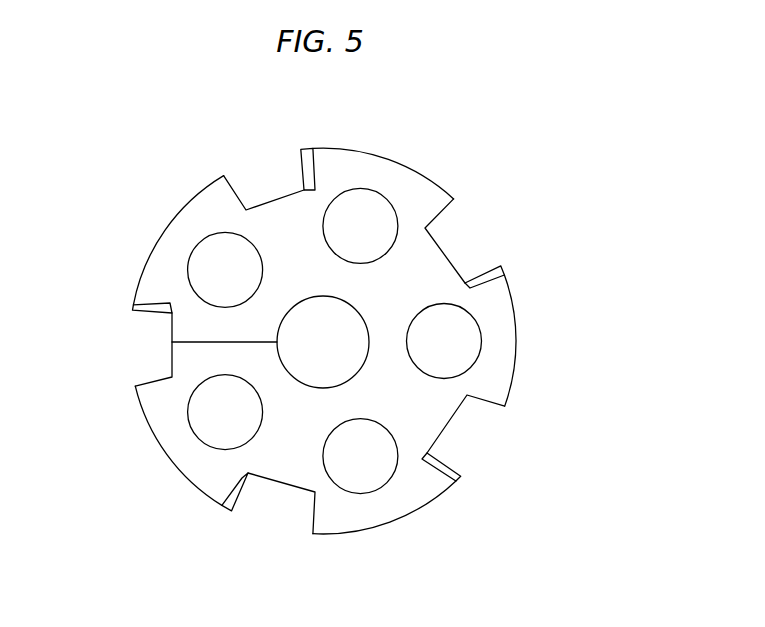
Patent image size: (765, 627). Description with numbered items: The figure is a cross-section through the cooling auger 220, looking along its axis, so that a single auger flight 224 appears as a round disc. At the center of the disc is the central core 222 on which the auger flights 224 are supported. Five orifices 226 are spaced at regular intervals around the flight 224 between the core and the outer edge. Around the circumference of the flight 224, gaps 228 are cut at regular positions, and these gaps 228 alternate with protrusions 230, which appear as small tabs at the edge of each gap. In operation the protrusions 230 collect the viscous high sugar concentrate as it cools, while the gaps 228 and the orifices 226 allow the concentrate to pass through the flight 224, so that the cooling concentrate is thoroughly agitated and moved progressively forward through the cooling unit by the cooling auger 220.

The cooling auger 220 is at (325, 332).
The central core 222 is at (306, 354).
The auger flights 224 is at (512, 339).
The orifices 226 is at (372, 468).
The gaps 228 is at (268, 176).
The protrusions 230 is at (304, 150).